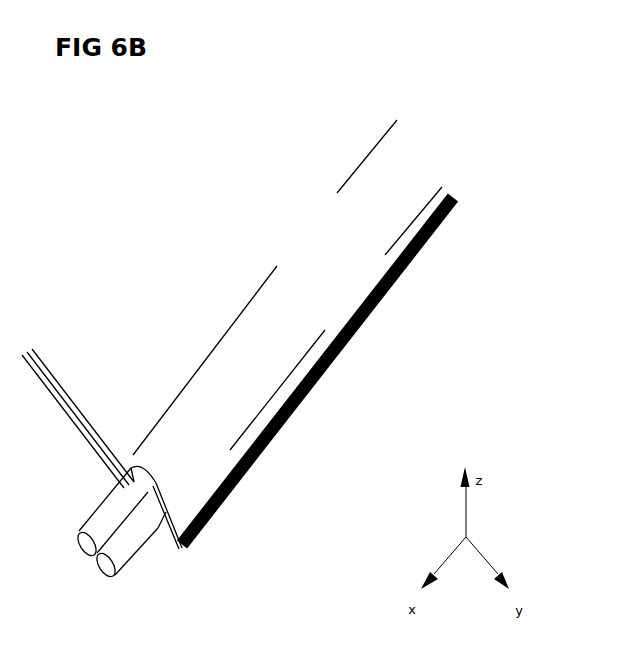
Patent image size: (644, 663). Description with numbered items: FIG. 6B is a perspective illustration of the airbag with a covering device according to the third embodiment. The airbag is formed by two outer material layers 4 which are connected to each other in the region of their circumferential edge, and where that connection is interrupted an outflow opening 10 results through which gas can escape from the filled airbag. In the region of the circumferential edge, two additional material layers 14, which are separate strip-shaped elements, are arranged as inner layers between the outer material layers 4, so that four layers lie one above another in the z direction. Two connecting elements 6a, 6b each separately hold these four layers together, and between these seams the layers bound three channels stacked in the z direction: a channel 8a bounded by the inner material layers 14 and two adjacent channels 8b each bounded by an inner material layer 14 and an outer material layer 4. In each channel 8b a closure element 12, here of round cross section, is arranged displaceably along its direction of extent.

The material layers 4 is at (38, 426).
The connecting element 6a is at (208, 350).
The connecting element 6b is at (270, 446).
The channel 8a is at (164, 512).
The channels 8b is at (126, 462).
The outflow opening 10 is at (348, 300).
The closure element 12 is at (86, 558).
The additional material layers 14 is at (110, 472).